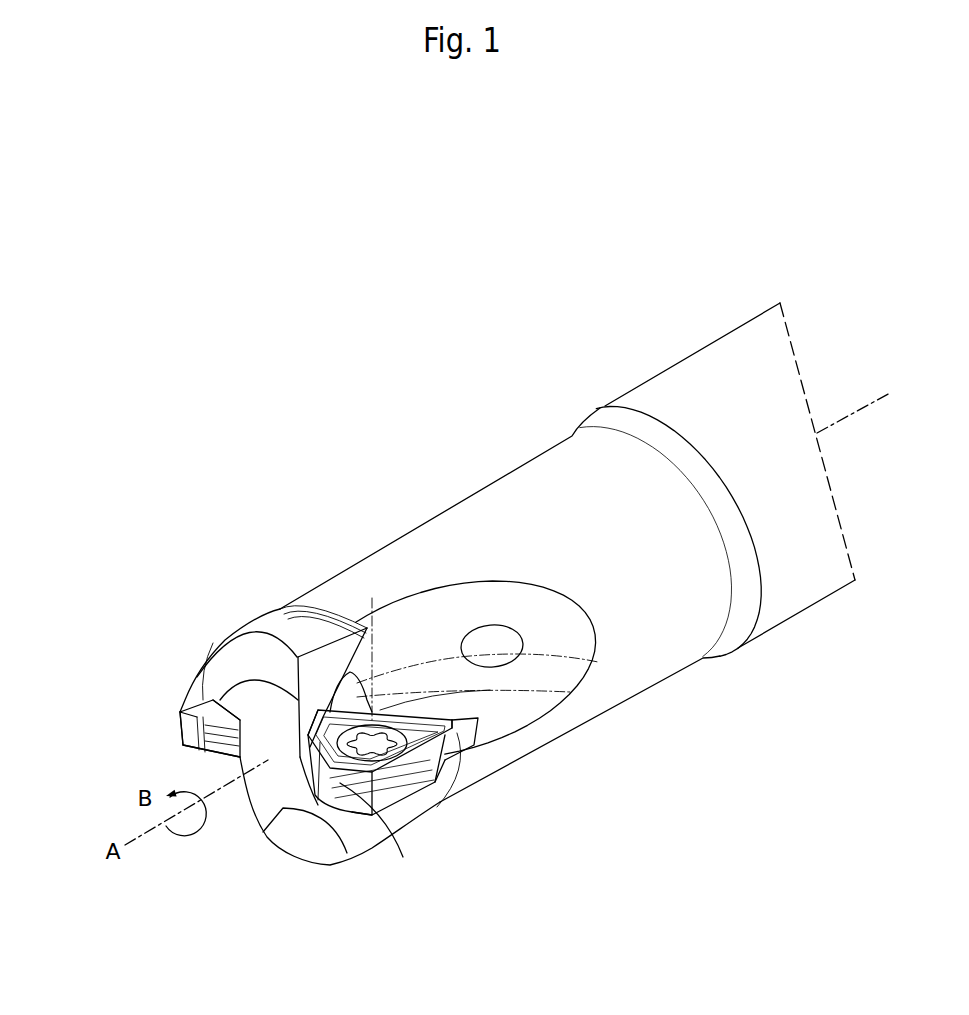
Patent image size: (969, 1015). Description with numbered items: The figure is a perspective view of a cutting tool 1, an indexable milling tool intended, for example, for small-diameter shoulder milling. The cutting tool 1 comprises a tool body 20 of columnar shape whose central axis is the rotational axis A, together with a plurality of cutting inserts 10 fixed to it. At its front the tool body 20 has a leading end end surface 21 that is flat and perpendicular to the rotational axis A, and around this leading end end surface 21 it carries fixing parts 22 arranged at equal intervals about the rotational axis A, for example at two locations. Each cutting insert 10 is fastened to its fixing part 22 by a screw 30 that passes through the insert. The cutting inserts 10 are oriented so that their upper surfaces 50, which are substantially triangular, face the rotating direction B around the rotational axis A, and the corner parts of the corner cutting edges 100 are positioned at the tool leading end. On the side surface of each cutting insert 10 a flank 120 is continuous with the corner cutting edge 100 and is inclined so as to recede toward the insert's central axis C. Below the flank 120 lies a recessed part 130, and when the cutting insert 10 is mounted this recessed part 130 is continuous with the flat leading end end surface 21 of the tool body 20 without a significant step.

The cutting tool 1 is at (466, 406).
The cutting insert 10 is at (172, 712).
The tool body 20 is at (357, 560).
The leading end end surface 21 is at (265, 838).
The fixing part 22 is at (211, 645).
The screw 30 is at (450, 770).
The upper surface 50 is at (195, 752).
The corner cutting edge 100 is at (177, 740).
The flank 120 is at (177, 737).
The recessed part 130 is at (193, 697).